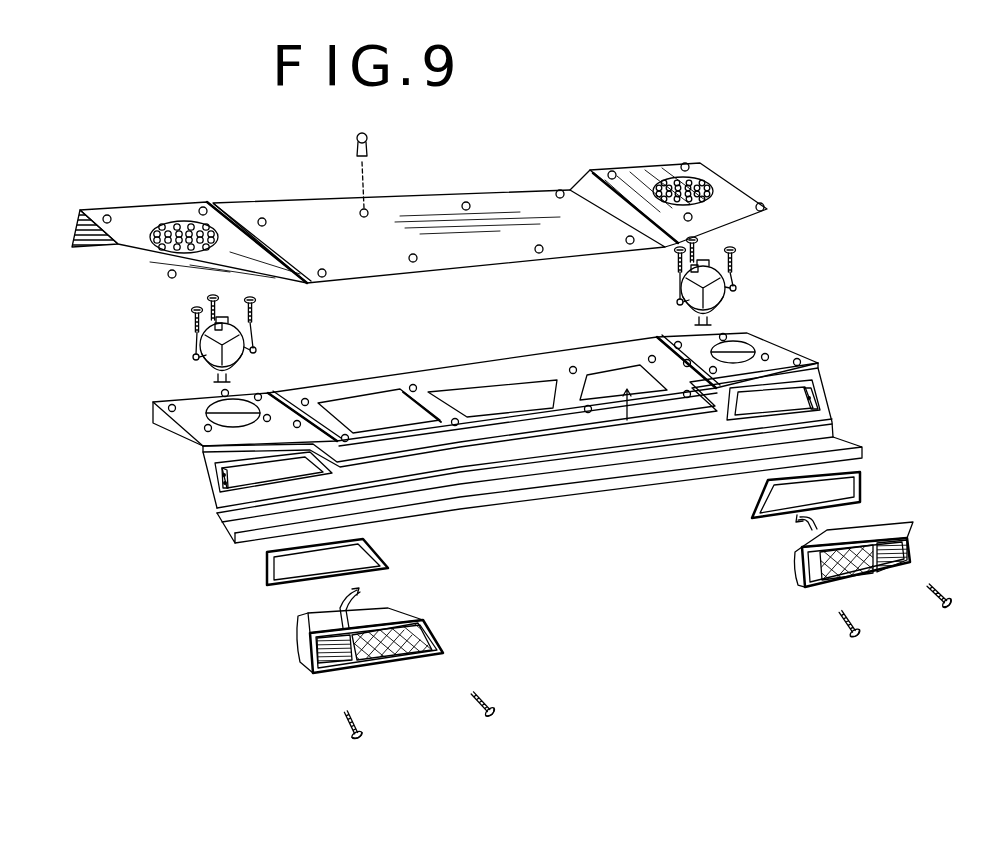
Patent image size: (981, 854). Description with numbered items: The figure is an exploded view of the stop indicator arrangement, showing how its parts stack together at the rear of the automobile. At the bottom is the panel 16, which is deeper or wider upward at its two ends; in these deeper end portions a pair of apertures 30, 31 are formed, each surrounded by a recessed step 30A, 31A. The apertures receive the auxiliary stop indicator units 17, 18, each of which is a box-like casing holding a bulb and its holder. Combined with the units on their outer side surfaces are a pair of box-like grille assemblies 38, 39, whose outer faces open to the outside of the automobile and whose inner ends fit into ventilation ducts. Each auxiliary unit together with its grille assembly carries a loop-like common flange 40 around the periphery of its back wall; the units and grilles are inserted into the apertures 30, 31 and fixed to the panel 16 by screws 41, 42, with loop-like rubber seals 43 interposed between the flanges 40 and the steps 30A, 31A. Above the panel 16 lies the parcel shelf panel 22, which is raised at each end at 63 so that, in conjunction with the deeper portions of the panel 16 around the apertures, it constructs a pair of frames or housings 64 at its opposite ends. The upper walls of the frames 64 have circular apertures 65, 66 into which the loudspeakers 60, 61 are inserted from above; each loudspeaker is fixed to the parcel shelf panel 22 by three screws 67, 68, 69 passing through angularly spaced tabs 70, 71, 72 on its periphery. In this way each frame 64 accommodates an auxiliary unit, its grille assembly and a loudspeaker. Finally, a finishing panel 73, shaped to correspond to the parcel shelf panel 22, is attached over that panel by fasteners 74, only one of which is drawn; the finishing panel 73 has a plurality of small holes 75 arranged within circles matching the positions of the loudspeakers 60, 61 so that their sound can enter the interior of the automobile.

The panel 16 is at (570, 440).
The auxiliary stop indicator unit 17 is at (398, 658).
The auxiliary stop indicator unit 18 is at (822, 578).
The parcel shelf panel 22 is at (458, 382).
The aperture 30 is at (243, 478).
The recessed step 30A is at (212, 480).
The aperture 31 is at (803, 398).
The recessed step 31A is at (825, 400).
The grille assembly 38 is at (320, 658).
The grille assembly 39 is at (890, 566).
The common flange 40 is at (428, 624).
The screw 41 is at (358, 738).
The screw 42 is at (490, 714).
The rubber seal 43 is at (388, 565).
The loudspeaker 60 is at (240, 342).
The loudspeaker 61 is at (718, 284).
The raised portion 63 is at (305, 402).
The frame 64 is at (168, 408).
The circular aperture 65 is at (243, 405).
The circular aperture 66 is at (745, 348).
The screw 67 is at (192, 312).
The screw 68 is at (208, 300).
The screw 69 is at (252, 300).
The tab 70 is at (192, 358).
The tab 71 is at (232, 320).
The tab 72 is at (258, 350).
The finishing panel 73 is at (520, 205).
The fastener 74 is at (372, 142).
The small holes 75 is at (186, 222).